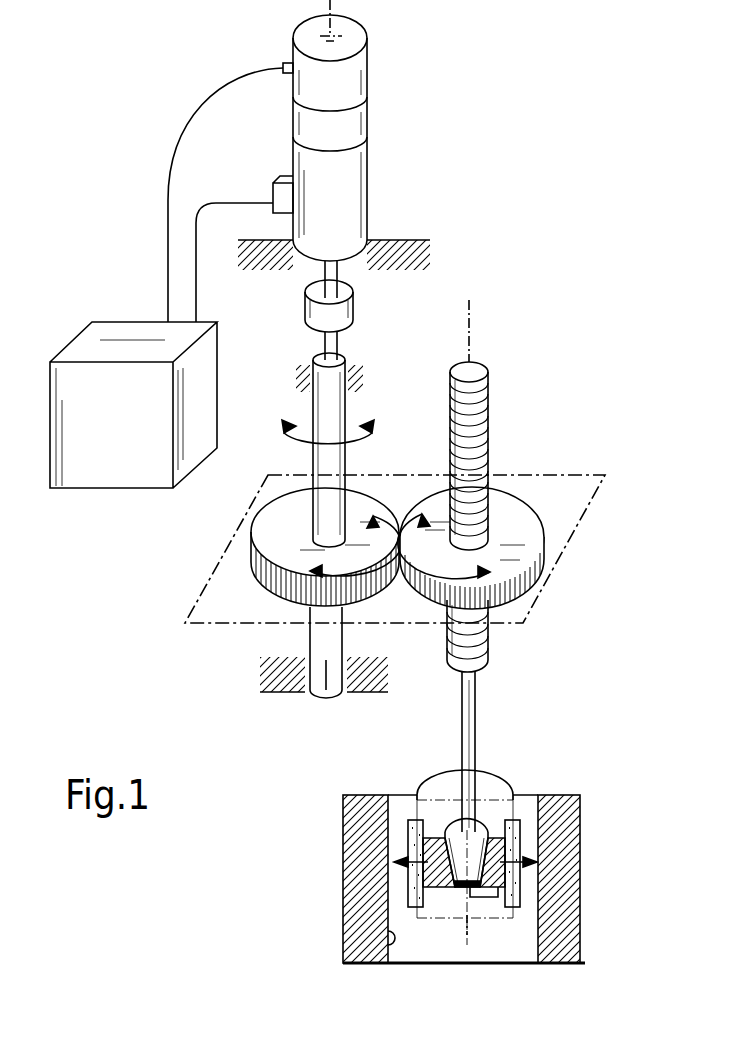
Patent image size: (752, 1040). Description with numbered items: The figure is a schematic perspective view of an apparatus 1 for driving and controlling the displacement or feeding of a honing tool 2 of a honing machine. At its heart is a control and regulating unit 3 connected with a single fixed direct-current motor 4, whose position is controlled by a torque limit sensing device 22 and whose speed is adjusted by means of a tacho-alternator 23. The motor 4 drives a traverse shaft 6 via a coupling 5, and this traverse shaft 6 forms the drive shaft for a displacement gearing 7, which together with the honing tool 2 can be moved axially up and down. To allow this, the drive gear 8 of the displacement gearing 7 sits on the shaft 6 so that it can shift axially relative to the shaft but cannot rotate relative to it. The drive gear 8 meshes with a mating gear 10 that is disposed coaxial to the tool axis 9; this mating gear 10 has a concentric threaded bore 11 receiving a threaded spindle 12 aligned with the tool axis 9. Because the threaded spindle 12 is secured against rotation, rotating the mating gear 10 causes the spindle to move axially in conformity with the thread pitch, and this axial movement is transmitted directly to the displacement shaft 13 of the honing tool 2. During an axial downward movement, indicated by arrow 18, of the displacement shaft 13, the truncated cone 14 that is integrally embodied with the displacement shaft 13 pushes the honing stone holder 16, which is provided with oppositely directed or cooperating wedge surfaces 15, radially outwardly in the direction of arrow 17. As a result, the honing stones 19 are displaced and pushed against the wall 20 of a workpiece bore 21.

The apparatus 1 is at (523, 446).
The honing tool 2 is at (545, 935).
The control and regulating unit 3 is at (203, 373).
The direct-current motor 4 is at (372, 183).
The coupling 5 is at (350, 300).
The traverse shaft 6 is at (330, 408).
The displacement gearing 7 is at (583, 515).
The drive gear 8 is at (278, 541).
The tool axis 9 is at (468, 925).
The mating gear 10 is at (527, 540).
The threaded bore 11 is at (478, 548).
The threaded spindle 12 is at (490, 662).
The displacement shaft 13 is at (476, 758).
The truncated cone 14 is at (521, 830).
The wedge surfaces 15 is at (490, 912).
The honing stone holder 16 is at (432, 886).
The arrow 17 is at (422, 876).
The arrow 18 is at (497, 746).
The honing stones 19 is at (408, 843).
The wall 20 is at (385, 948).
The workpiece bore 21 is at (508, 947).
The torque limit sensing device 22 is at (372, 66).
The tacho-alternator 23 is at (372, 122).